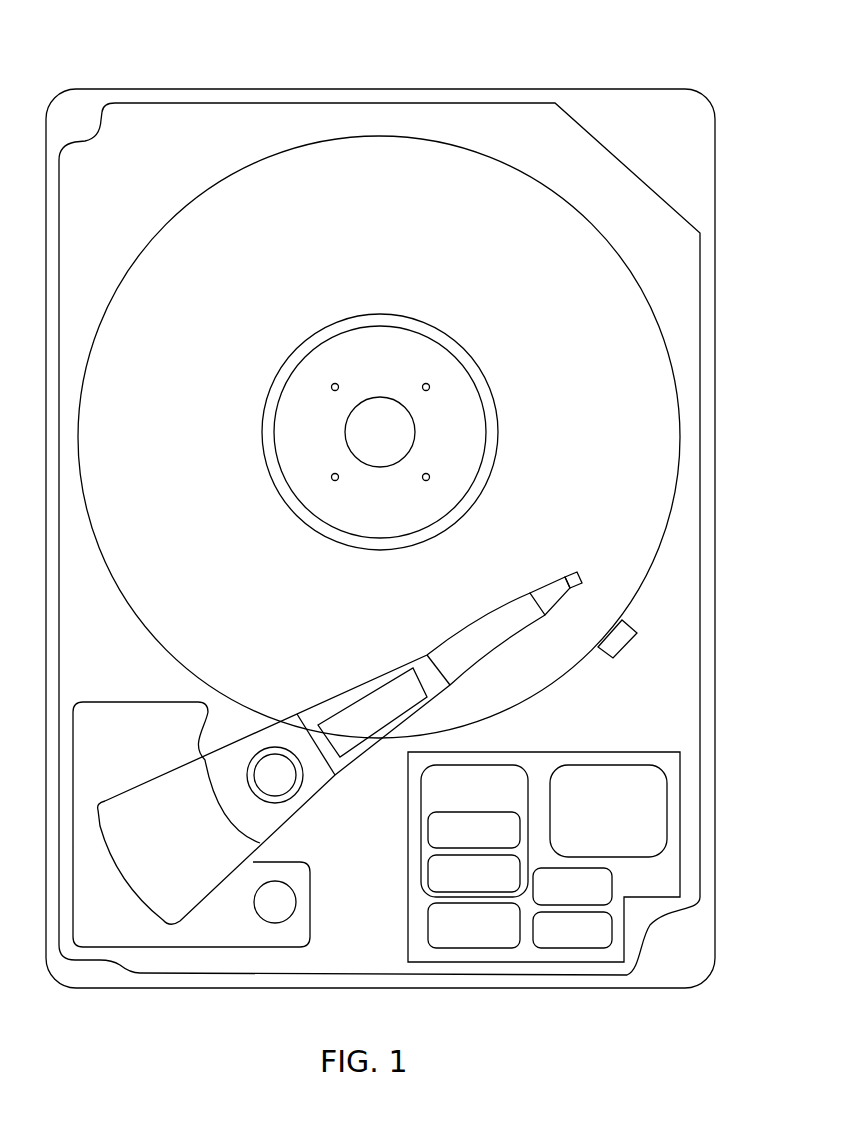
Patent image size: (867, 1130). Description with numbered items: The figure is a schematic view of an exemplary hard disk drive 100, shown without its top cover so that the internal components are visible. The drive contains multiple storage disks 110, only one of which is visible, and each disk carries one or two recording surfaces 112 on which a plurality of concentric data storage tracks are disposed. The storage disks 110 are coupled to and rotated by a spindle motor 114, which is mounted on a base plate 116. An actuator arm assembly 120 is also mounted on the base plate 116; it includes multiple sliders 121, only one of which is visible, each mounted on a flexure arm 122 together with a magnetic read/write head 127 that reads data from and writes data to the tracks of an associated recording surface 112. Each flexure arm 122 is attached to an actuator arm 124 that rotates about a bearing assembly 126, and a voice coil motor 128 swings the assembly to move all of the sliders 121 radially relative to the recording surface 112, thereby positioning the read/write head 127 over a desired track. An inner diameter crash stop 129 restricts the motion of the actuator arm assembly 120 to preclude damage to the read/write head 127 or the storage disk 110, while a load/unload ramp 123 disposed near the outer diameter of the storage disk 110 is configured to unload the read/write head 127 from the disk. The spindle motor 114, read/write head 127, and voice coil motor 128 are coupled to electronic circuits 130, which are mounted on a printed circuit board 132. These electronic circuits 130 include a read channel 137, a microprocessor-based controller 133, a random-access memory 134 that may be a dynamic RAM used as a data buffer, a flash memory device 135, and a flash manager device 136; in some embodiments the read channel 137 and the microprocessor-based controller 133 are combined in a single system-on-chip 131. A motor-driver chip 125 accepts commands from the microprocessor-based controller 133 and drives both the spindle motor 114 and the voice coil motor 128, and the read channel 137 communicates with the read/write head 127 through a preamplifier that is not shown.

The hard disk drive 100 is at (126, 50).
The storage disk 110 is at (168, 222).
The recording surface 112 is at (198, 412).
The spindle motor 114 is at (470, 377).
The base plate 116 is at (700, 563).
The actuator arm assembly 120 is at (320, 656).
The slider 121 is at (582, 573).
The flexure arm 122 is at (548, 583).
The load/unload ramp 123 is at (627, 650).
The actuator arm 124 is at (443, 632).
The motor-driver chip 125 is at (456, 937).
The bearing assembly 126 is at (300, 816).
The read/write head 127 is at (575, 545).
The voice coil motor 128 is at (313, 890).
The inner diameter crash stop 129 is at (277, 922).
The electronic circuits 130 is at (549, 815).
The system-on-chip 131 is at (456, 803).
The printed circuit board 132 is at (625, 752).
The microprocessor-based controller 133 is at (456, 843).
The random-access memory 134 is at (553, 898).
The flash memory device 135 is at (589, 822).
The flash manager device 136 is at (553, 941).
The read channel 137 is at (456, 883).